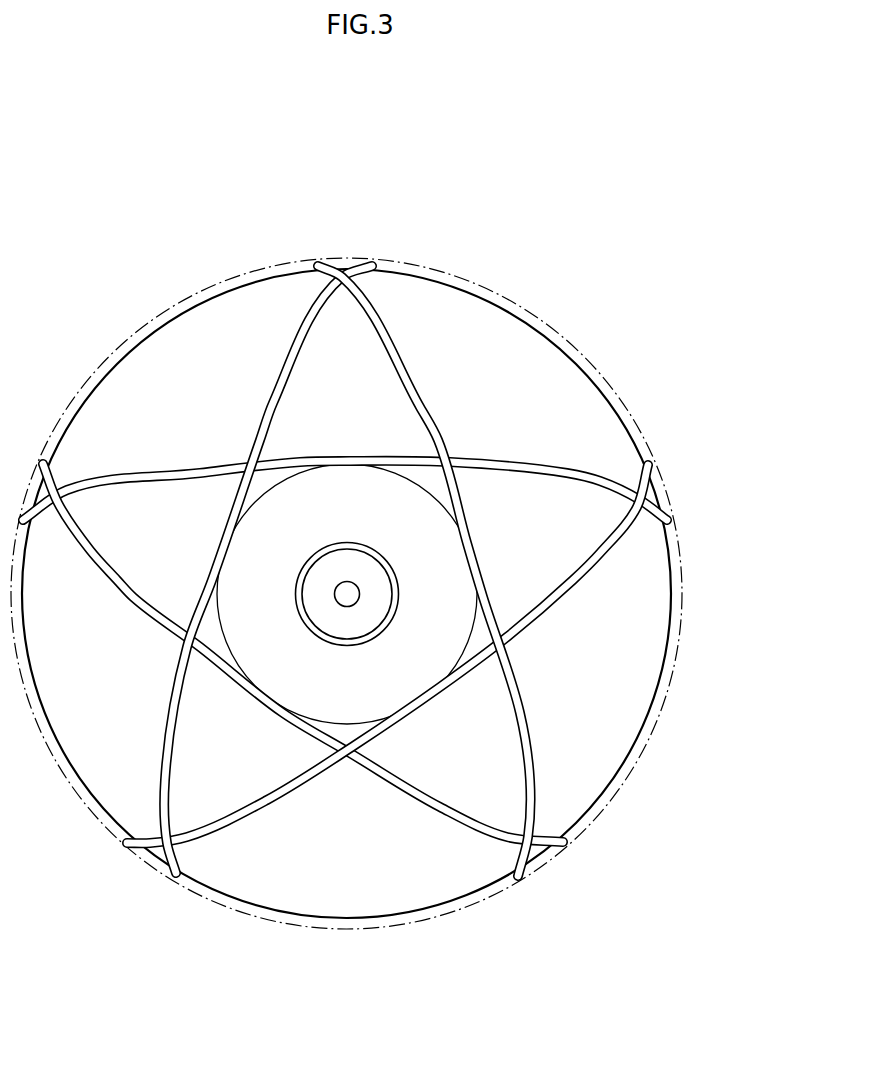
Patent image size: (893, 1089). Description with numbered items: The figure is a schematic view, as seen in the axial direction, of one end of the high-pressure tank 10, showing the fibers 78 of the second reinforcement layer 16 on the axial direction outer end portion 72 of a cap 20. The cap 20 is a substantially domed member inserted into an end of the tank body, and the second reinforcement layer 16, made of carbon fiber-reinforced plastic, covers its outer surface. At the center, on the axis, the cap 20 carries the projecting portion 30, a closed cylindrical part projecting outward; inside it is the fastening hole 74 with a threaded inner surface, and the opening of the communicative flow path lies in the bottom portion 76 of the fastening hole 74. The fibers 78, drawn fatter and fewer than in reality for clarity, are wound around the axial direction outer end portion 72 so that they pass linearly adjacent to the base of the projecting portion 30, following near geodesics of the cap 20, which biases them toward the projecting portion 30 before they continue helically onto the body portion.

The high-pressure tank 10 is at (516, 234).
The second reinforcement layer 16 is at (620, 398).
The cap 20 is at (684, 647).
The projecting portion 30 is at (336, 492).
The axial direction outer end portion 72 is at (372, 593).
The fastening hole 74 is at (382, 608).
The bottom portion 76 is at (322, 597).
The fibers 78 is at (272, 404).